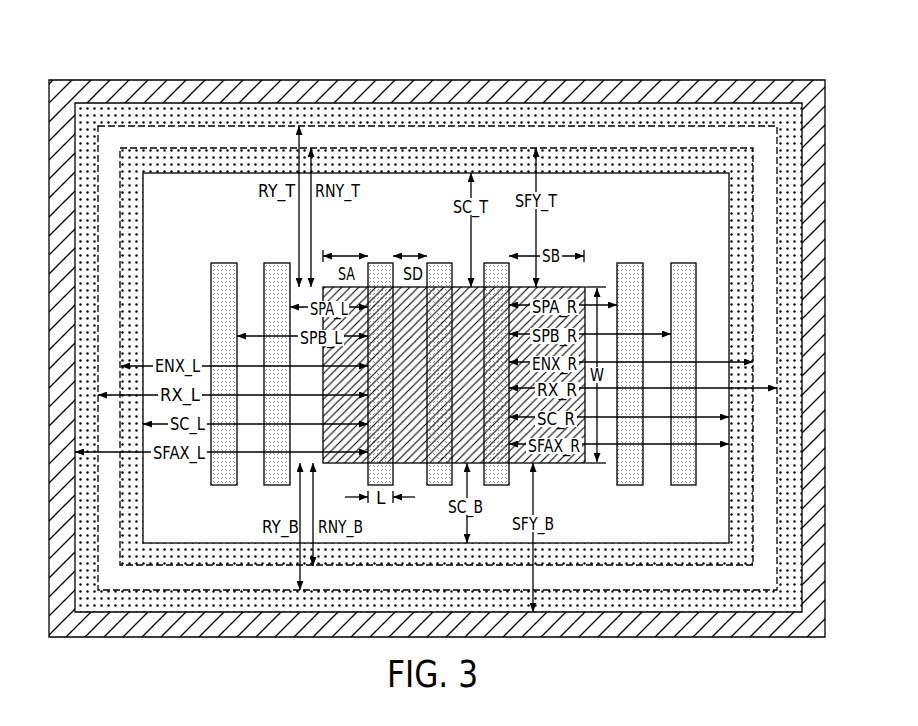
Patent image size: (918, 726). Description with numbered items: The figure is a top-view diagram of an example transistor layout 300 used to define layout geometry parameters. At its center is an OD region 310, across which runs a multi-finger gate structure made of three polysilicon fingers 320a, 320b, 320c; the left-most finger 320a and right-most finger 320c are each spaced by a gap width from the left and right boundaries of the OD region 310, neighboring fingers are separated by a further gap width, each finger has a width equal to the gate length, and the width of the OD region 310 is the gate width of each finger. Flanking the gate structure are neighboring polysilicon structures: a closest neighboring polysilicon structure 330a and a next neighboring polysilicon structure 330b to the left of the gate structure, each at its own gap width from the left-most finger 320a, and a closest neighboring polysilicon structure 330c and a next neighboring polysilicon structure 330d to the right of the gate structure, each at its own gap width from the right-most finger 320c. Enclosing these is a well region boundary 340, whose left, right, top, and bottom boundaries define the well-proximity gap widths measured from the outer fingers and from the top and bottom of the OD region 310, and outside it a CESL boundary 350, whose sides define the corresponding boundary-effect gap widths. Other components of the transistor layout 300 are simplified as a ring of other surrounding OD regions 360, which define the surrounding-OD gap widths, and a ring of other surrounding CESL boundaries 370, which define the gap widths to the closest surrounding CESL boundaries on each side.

The transistor layout 300 is at (760, 64).
The OD region 310 is at (562, 466).
The polysilicon structure 320a is at (380, 263).
The polysilicon structure 320b is at (440, 263).
The polysilicon structure 320c is at (497, 263).
The neighboring polysilicon structure 330a is at (278, 263).
The neighboring polysilicon structure 330b is at (225, 263).
The neighboring polysilicon structure 330c is at (632, 263).
The neighboring polysilicon structure 330d is at (686, 263).
The well region boundary 340 is at (630, 173).
The CESL boundary 350 is at (594, 158).
The other surrounding OD regions 360 is at (181, 80).
The other surrounding CESL boundaries 370 is at (234, 126).